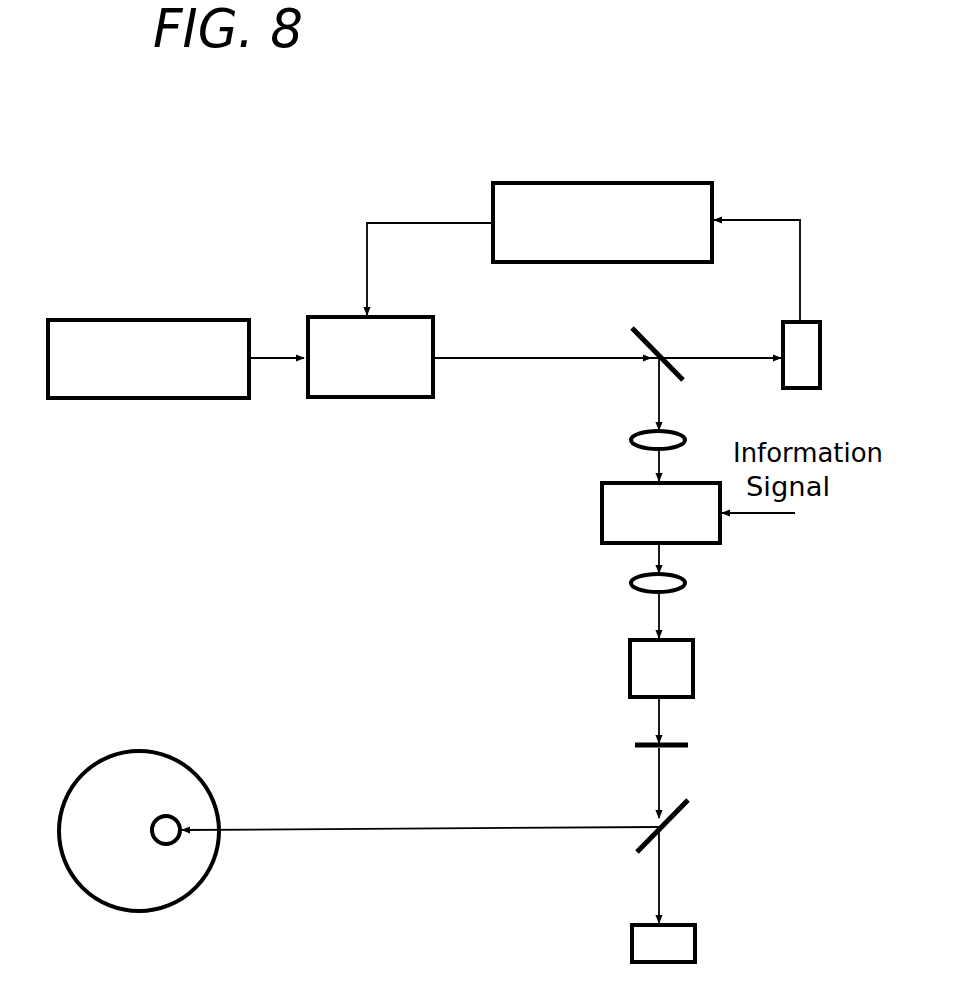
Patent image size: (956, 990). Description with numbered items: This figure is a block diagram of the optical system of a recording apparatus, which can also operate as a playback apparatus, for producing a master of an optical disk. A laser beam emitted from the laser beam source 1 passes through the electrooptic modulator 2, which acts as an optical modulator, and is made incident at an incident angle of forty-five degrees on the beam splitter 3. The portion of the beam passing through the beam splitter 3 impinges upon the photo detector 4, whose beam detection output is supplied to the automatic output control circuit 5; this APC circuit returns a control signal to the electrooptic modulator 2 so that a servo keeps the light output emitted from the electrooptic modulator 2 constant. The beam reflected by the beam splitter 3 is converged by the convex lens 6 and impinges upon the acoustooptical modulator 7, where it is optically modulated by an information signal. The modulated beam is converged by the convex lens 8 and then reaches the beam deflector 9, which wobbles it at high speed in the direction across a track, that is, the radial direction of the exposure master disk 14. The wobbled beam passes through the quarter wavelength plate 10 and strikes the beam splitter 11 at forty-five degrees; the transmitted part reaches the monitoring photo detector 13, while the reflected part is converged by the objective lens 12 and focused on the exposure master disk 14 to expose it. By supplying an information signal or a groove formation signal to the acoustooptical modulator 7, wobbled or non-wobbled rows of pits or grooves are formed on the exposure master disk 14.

The laser beam source 1 is at (174, 320).
The electrooptic modulator 2 is at (377, 398).
The beam splitter 3 is at (652, 333).
The photo detector 4 is at (820, 342).
The automatic output control circuit 5 is at (602, 183).
The convex lens 6 is at (632, 440).
The acoustooptical modulator 7 is at (602, 513).
The convex lens 8 is at (685, 580).
The beam deflector 9 is at (696, 660).
The quarter wavelength plate 10 is at (690, 745).
The beam splitter 11 is at (690, 808).
The objective lens 12 is at (165, 844).
The monitoring photo detector 13 is at (697, 937).
The exposure master disk 14 is at (140, 751).